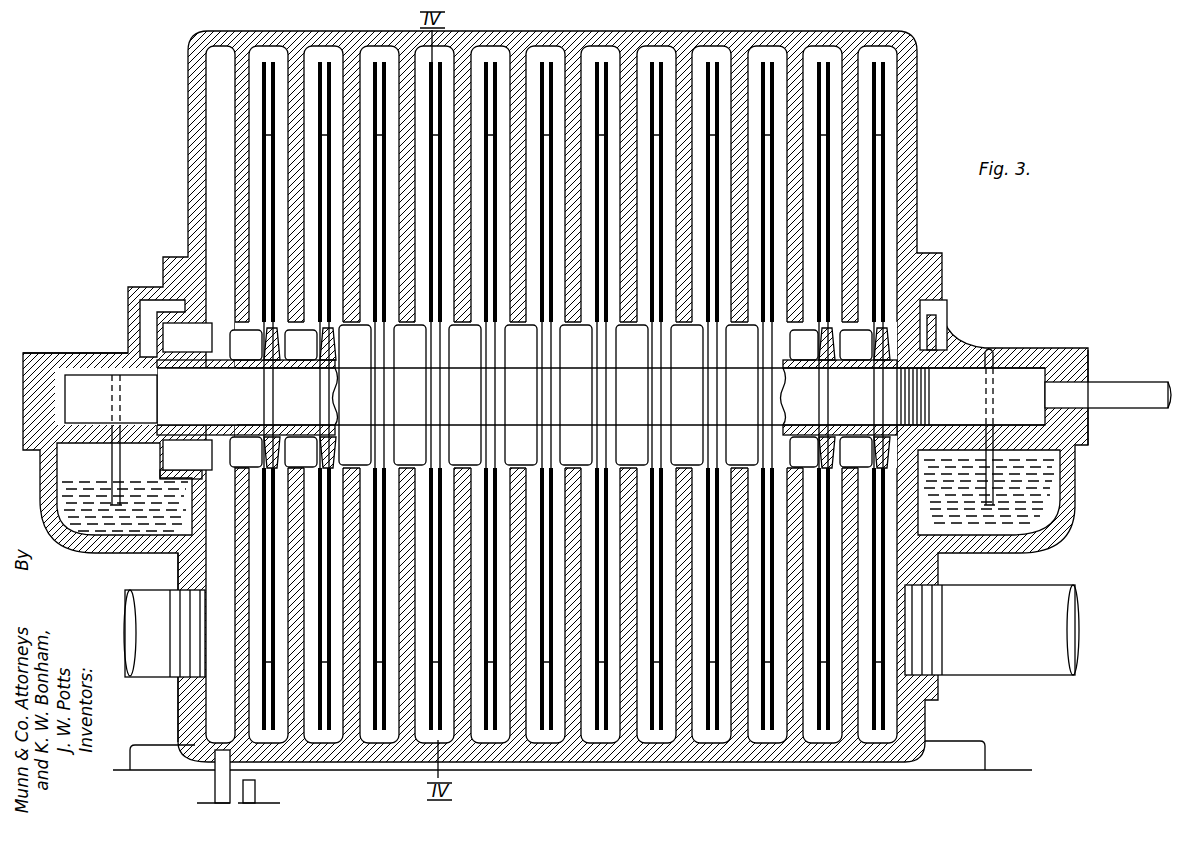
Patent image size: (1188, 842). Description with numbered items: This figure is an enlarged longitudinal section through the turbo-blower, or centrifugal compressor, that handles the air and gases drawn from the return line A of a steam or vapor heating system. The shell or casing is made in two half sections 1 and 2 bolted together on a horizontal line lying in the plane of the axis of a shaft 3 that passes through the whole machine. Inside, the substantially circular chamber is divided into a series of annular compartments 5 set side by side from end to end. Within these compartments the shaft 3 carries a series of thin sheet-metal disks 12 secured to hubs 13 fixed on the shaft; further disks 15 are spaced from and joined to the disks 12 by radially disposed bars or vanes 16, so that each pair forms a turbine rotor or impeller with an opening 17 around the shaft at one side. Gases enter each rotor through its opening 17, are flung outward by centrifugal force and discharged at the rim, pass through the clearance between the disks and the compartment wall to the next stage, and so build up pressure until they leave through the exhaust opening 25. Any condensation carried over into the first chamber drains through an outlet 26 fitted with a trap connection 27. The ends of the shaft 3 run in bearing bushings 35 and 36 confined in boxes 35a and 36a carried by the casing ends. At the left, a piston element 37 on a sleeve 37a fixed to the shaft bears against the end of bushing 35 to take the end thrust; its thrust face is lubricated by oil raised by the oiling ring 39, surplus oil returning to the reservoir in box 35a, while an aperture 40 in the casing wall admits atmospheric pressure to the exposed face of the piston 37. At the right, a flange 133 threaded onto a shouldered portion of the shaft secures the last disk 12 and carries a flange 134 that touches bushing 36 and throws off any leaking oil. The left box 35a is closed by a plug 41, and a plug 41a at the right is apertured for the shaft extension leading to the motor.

The casing half section 1 is at (205, 140).
The casing half section 2 is at (178, 571).
The shaft 3 is at (664, 396).
The annular compartments 5 is at (272, 50).
The disks 12 is at (278, 78).
The hubs 13 is at (290, 356).
The disks 15 is at (768, 777).
The radially disposed bars or vanes 16 is at (492, 55).
The opening 17 is at (560, 398).
The exhaust opening 25 is at (930, 605).
The outlet 26 is at (194, 748).
The trap connection 27 is at (258, 792).
The bearing bushing 35 is at (106, 396).
The box 35a is at (99, 480).
The bearing bushing 36 is at (971, 387).
The box 36a is at (989, 480).
The piston element 37 is at (187, 396).
The sleeve 37a is at (527, 397).
The oiling ring 39 is at (200, 472).
The aperture 40 is at (128, 327).
The plug 41 is at (30, 356).
The plug 41a is at (1090, 355).
The flange 133 is at (935, 330).
The flange 134 is at (936, 345).
The return line A is at (164, 633).